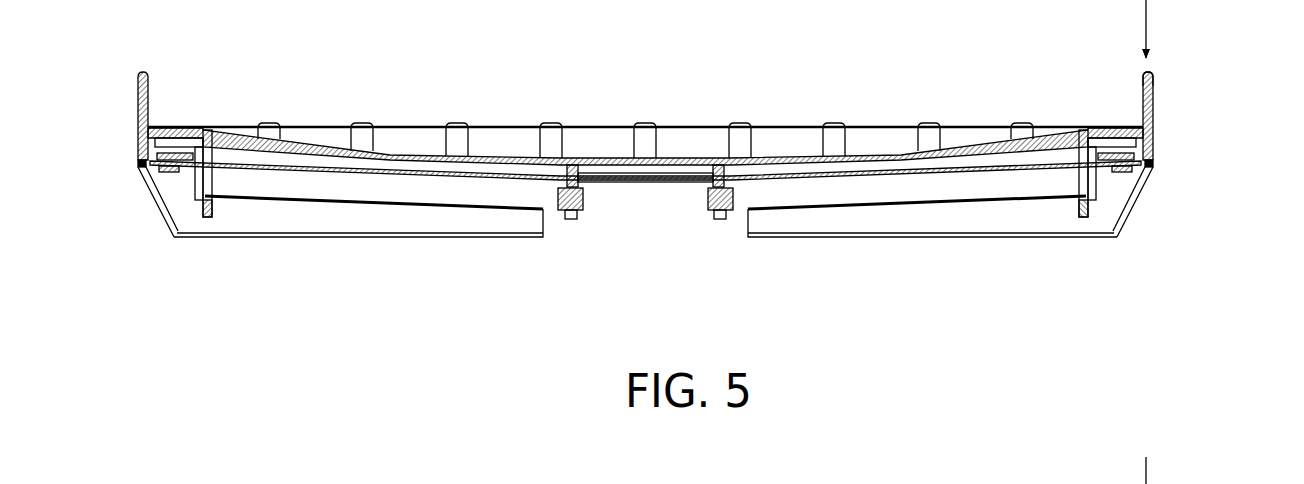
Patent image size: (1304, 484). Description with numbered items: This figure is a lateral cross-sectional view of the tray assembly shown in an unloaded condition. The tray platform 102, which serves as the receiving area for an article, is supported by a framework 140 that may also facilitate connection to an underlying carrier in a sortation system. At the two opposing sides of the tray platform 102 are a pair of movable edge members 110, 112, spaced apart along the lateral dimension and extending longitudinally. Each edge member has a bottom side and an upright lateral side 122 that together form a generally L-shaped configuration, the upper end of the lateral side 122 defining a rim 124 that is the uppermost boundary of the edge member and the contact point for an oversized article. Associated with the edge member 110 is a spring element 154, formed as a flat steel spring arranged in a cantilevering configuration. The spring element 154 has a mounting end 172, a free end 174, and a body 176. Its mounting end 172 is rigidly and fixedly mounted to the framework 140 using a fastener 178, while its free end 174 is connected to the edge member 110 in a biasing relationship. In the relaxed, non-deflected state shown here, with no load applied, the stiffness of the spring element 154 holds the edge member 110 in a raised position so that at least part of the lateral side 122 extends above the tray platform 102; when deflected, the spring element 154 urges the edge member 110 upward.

The tray platform 102 is at (418, 122).
The movable edge member 110 is at (1180, 140).
The movable edge member 112 is at (128, 93).
The lateral side 122 is at (1157, 102).
The rim 124 is at (1152, 70).
The framework 140 is at (315, 140).
The spring element 154 is at (428, 190).
The mounting end 172 is at (760, 212).
The free end 174 is at (1123, 177).
The body 176 is at (942, 178).
The fastener 178 is at (585, 207).